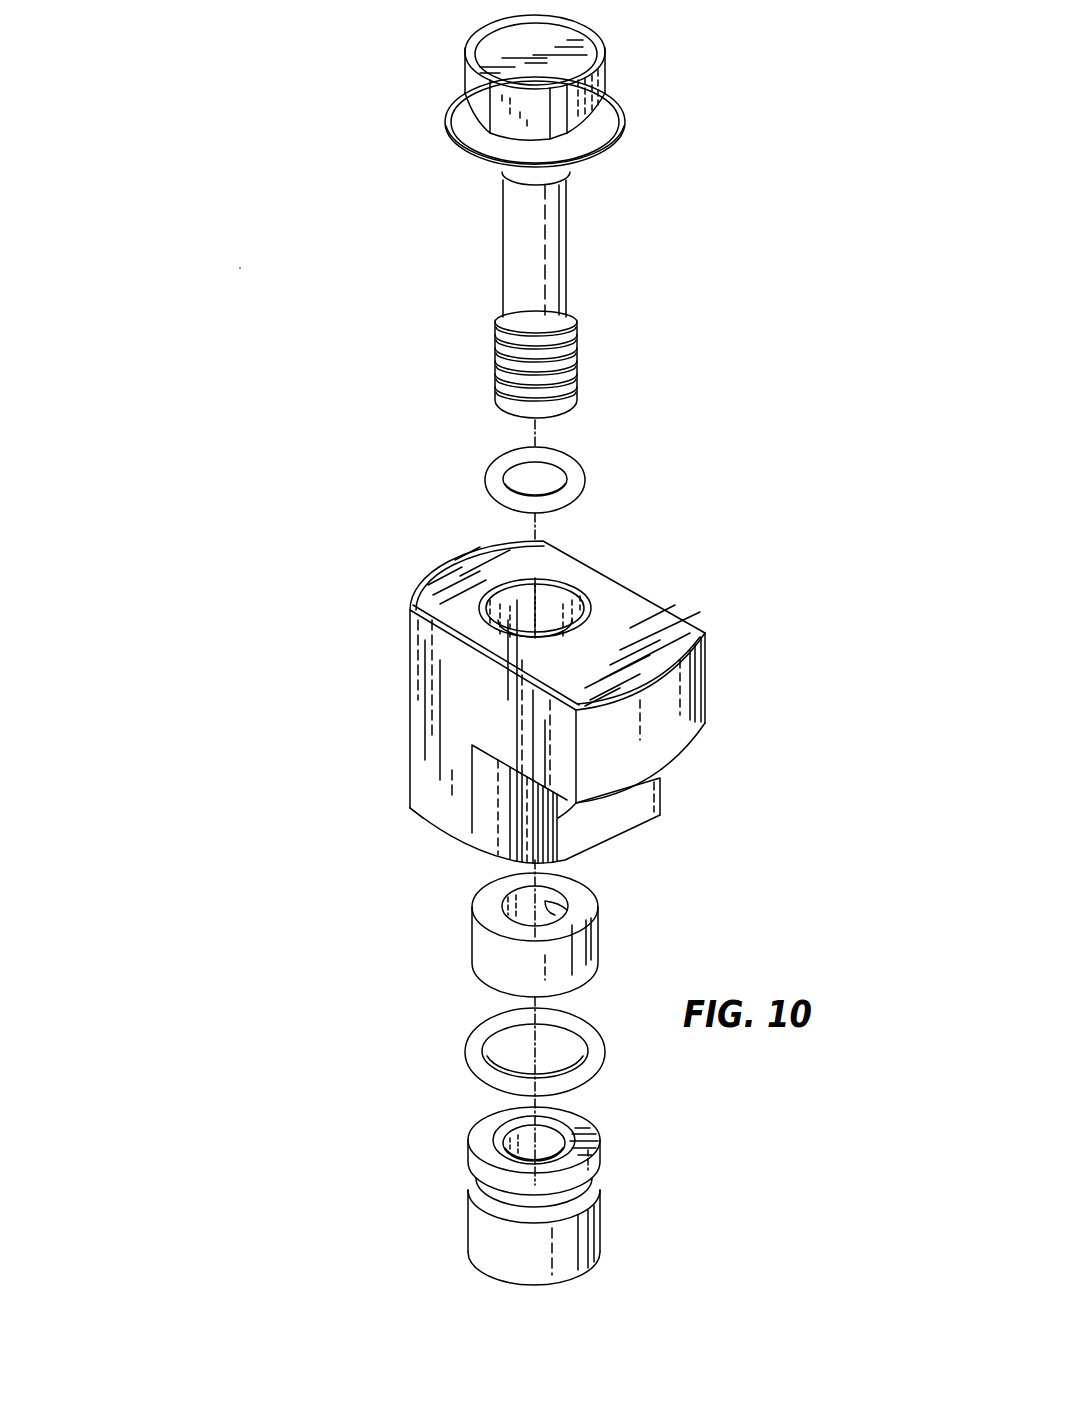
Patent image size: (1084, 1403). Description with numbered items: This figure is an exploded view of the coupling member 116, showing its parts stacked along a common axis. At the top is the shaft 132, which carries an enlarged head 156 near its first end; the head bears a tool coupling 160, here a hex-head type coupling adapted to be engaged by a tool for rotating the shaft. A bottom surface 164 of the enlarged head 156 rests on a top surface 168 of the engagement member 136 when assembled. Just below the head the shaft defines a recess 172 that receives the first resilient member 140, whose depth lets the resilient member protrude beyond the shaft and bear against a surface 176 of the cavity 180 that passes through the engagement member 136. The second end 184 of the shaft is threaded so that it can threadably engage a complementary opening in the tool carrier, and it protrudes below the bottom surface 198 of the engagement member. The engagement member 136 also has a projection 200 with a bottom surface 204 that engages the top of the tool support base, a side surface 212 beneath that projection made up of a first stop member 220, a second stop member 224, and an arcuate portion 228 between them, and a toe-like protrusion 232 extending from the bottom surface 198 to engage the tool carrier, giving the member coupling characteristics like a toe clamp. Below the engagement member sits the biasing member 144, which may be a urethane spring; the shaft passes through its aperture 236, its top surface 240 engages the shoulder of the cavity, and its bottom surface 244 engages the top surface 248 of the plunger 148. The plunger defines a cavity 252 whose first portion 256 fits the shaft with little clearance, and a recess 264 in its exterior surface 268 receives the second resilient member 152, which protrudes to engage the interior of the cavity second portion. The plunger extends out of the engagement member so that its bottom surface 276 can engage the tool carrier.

The coupling member 116 is at (242, 268).
The shaft 132 is at (632, 232).
The engagement member 136 is at (738, 658).
The first resilient member 140 is at (575, 467).
The biasing member 144 is at (583, 948).
The plunger 148 is at (457, 1215).
The second resilient member 152 is at (473, 1053).
The enlarged head 156 is at (622, 50).
The tool coupling 160 is at (470, 72).
The bottom surface 164 is at (480, 158).
The top surface 168 is at (628, 605).
The recess 172 is at (522, 180).
The surface 176 is at (505, 603).
The cavity 180 is at (552, 605).
The second end 184 is at (575, 365).
The bottom surface 198 is at (452, 833).
The projection 200 is at (683, 722).
The bottom surface 204 is at (562, 807).
The side surface 212 is at (523, 838).
The first stop member 220 is at (655, 792).
The second stop member 224 is at (442, 760).
The arcuate portion 228 is at (492, 797).
The protrusion 232 is at (423, 818).
The aperture 236 is at (567, 910).
The top surface 240 is at (485, 907).
The bottom surface 244 is at (485, 983).
The top surface 248 is at (590, 1140).
The cavity 252 is at (513, 1143).
The first portion 256 is at (548, 1133).
The recess 264 is at (590, 1203).
The exterior surface 268 is at (490, 1243).
The bottom surface 276 is at (568, 1287).